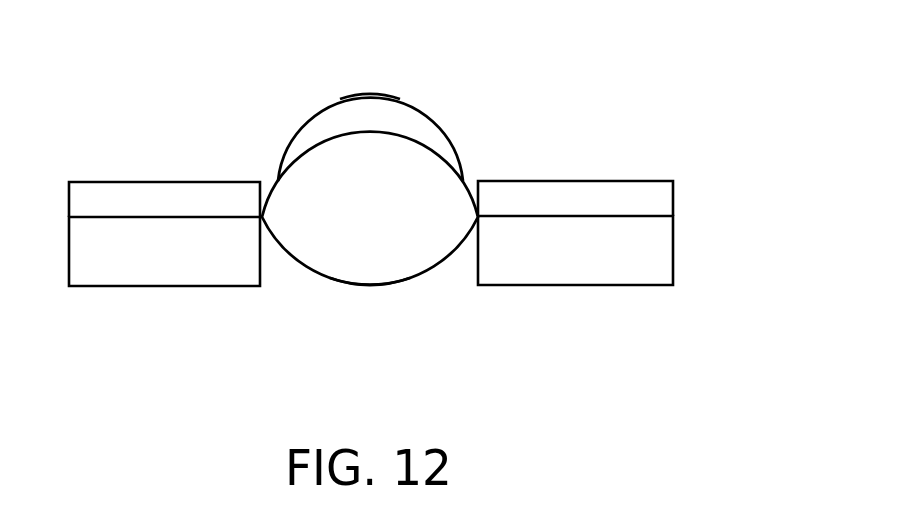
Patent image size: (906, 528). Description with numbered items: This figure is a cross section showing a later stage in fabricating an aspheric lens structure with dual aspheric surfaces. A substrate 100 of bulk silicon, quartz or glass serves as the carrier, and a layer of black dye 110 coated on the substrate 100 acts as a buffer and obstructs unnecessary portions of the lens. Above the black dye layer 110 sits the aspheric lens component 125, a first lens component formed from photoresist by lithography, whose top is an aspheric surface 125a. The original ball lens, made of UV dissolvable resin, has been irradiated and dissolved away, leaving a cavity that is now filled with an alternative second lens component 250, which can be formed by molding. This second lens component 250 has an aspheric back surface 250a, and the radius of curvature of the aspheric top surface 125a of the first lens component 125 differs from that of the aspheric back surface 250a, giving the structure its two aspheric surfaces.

The substrate 100 is at (648, 252).
The layer of black dye 110 is at (648, 196).
The aspheric lens component 125 is at (430, 135).
The aspheric surface 125a is at (371, 97).
The alternative second lens component 250 is at (337, 202).
The aspheric back surface 250a is at (370, 287).